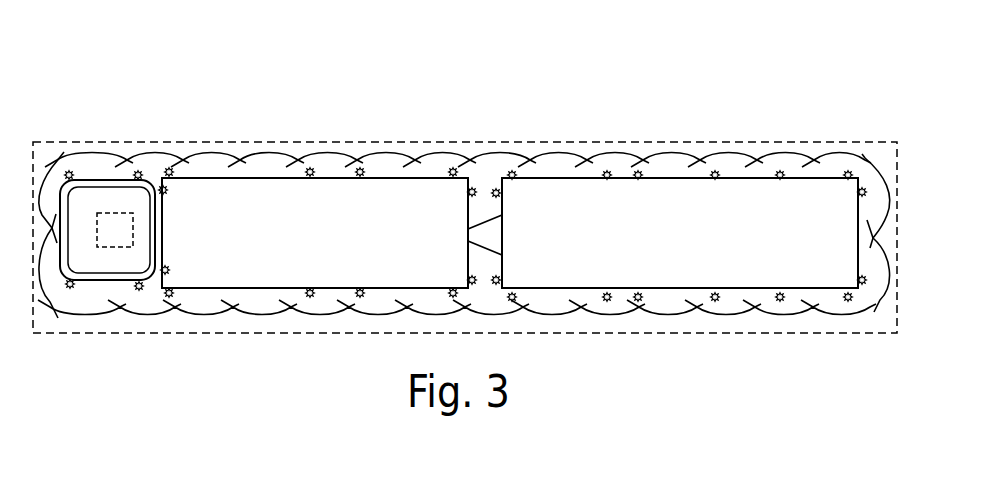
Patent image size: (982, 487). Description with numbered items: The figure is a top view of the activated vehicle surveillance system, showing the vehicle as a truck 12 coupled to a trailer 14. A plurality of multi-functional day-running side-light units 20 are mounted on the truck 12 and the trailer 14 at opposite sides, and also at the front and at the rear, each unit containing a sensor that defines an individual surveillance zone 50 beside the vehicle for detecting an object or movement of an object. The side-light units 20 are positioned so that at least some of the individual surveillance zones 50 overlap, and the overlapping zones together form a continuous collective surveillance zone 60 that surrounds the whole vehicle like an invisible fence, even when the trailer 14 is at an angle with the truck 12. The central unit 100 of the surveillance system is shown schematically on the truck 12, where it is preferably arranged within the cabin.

The truck 12 is at (315, 248).
The trailer 14 is at (687, 248).
The multi-functional day-running side-light unit 20 is at (364, 298).
The surveillance zone 50 is at (323, 158).
The collective surveillance zone 60 is at (730, 134).
The central unit 100 is at (122, 215).